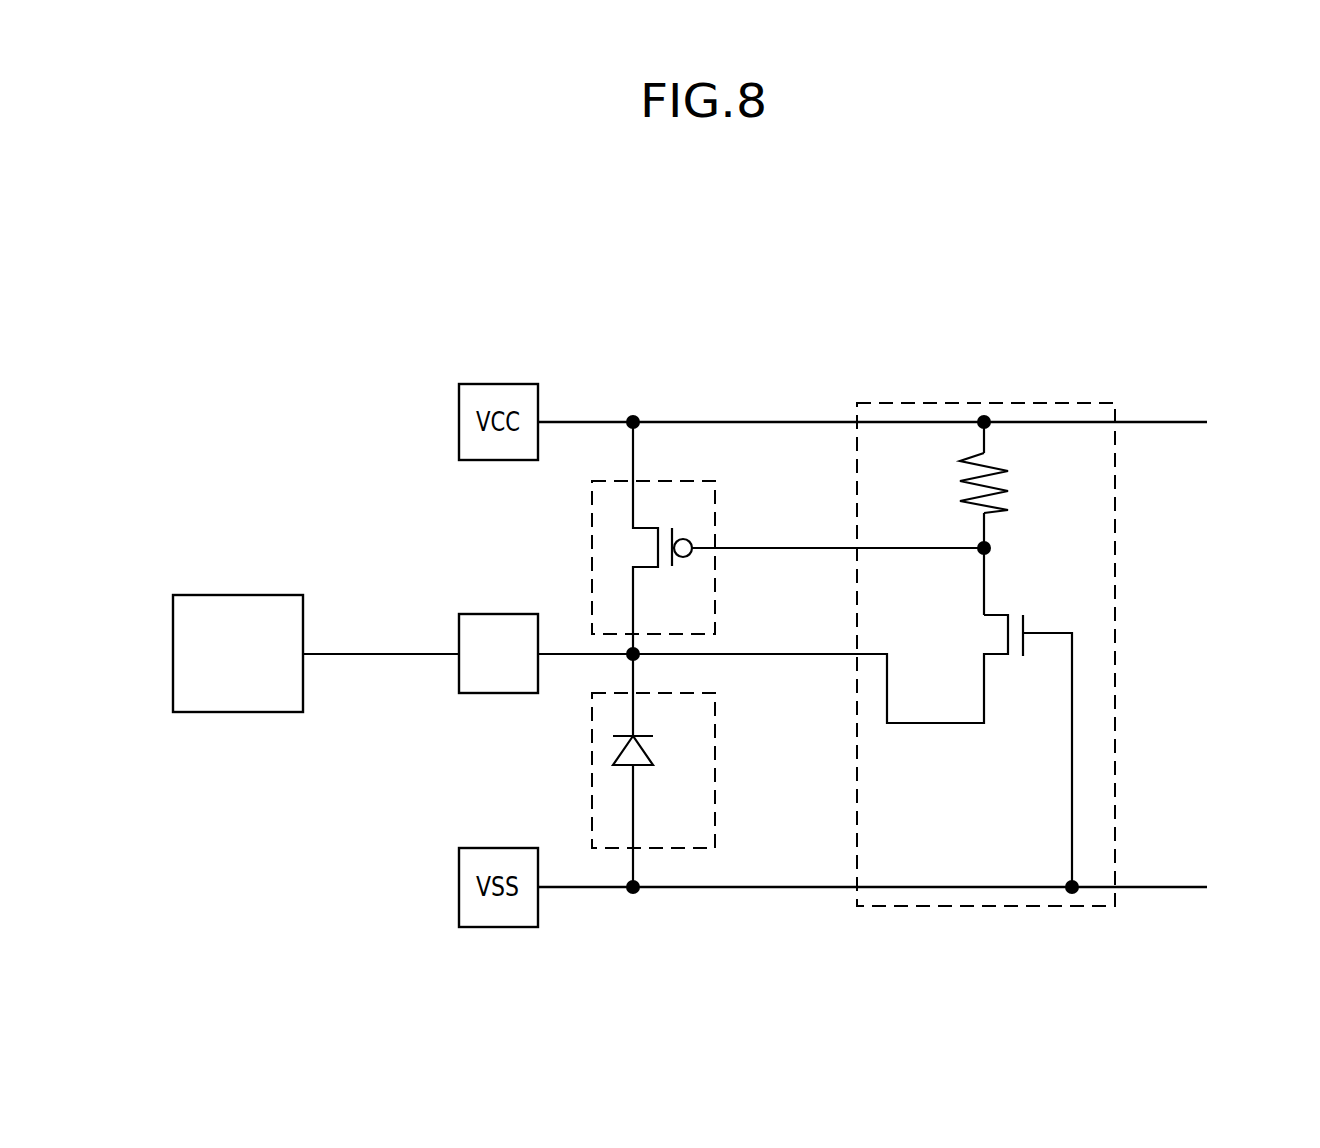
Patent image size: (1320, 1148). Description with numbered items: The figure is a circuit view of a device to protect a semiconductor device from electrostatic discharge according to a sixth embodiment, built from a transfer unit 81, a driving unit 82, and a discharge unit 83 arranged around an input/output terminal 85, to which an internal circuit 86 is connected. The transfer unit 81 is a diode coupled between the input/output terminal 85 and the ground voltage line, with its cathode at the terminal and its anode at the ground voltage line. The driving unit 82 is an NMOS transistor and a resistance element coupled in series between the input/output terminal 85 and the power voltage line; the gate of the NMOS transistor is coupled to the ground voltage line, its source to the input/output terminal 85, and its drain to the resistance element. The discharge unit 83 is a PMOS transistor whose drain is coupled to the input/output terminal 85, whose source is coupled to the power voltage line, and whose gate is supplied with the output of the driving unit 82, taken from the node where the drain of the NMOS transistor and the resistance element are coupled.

The transfer unit 81 is at (715, 720).
The driving unit 82 is at (985, 403).
The discharge unit 83 is at (715, 508).
The input/output terminal 85 is at (497, 614).
The internal circuit 86 is at (238, 595).